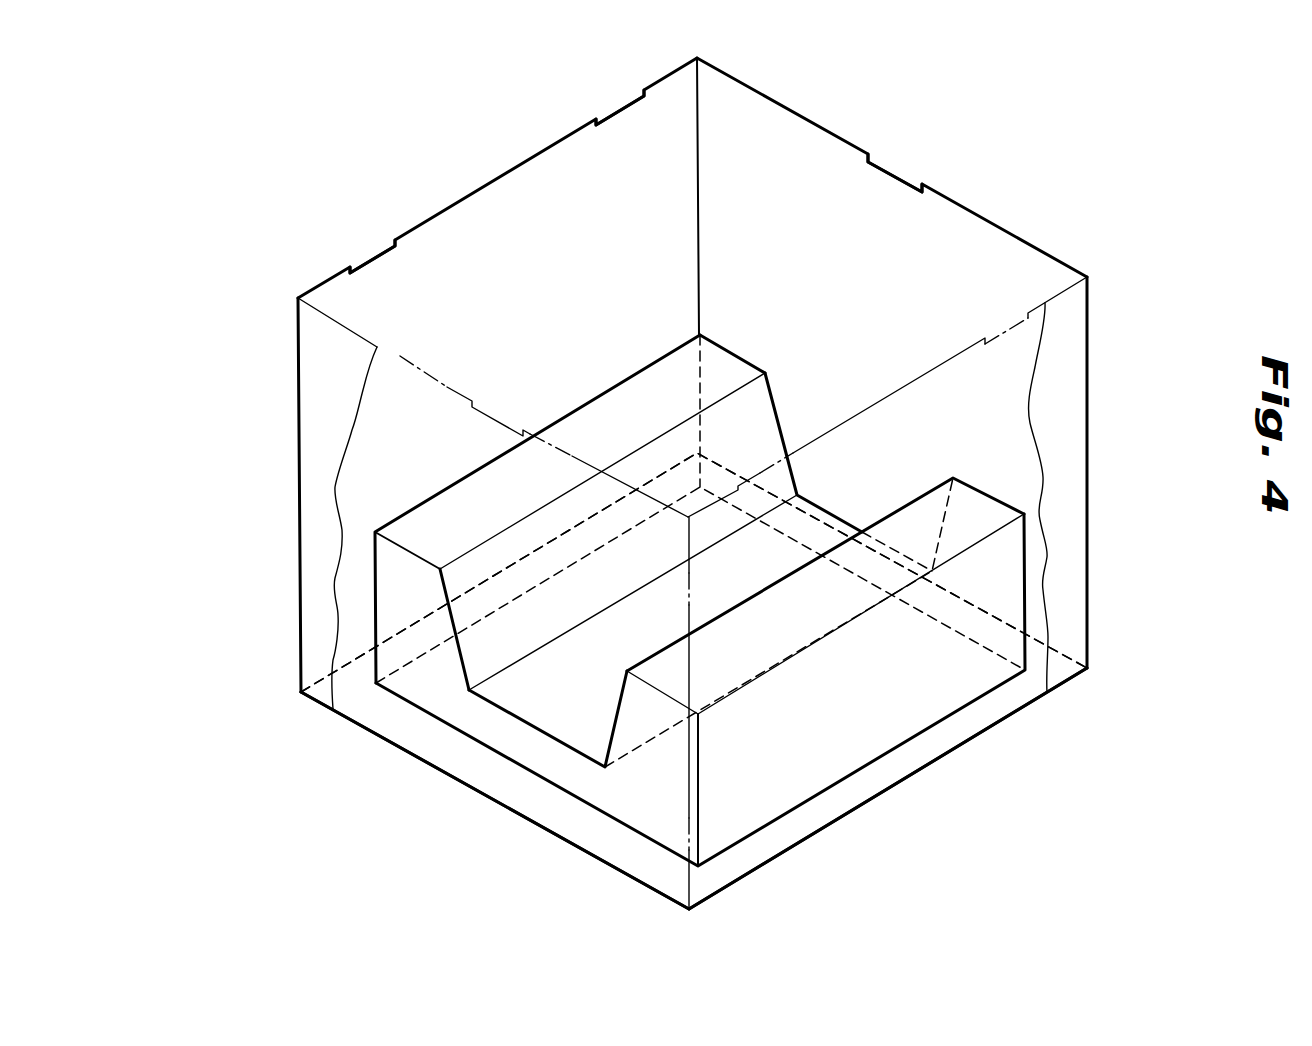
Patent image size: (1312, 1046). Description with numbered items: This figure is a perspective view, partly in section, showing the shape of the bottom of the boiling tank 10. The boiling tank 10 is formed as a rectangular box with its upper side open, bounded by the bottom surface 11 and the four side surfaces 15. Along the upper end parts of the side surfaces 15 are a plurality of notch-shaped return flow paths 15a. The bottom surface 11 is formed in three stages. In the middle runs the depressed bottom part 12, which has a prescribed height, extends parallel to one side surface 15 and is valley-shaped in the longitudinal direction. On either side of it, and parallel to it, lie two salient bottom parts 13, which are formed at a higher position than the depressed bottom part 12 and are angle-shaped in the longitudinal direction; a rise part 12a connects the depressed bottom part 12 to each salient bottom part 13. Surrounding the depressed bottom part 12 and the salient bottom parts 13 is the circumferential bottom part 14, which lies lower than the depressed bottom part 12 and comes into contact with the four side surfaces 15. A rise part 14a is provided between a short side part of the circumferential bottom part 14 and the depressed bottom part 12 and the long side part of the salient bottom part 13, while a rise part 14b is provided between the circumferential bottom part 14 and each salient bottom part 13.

The boiling tank 10 is at (487, 163).
The bottom surface 11 is at (978, 735).
The depressed bottom part 12 is at (540, 707).
The rise part 12a is at (485, 640).
The salient bottom part 13 is at (618, 413).
The circumferential bottom part 14 is at (792, 817).
The rise part 14a is at (642, 788).
The rise part 14b is at (372, 598).
The side surface 15 is at (437, 237).
The return flow path 15a is at (625, 103).